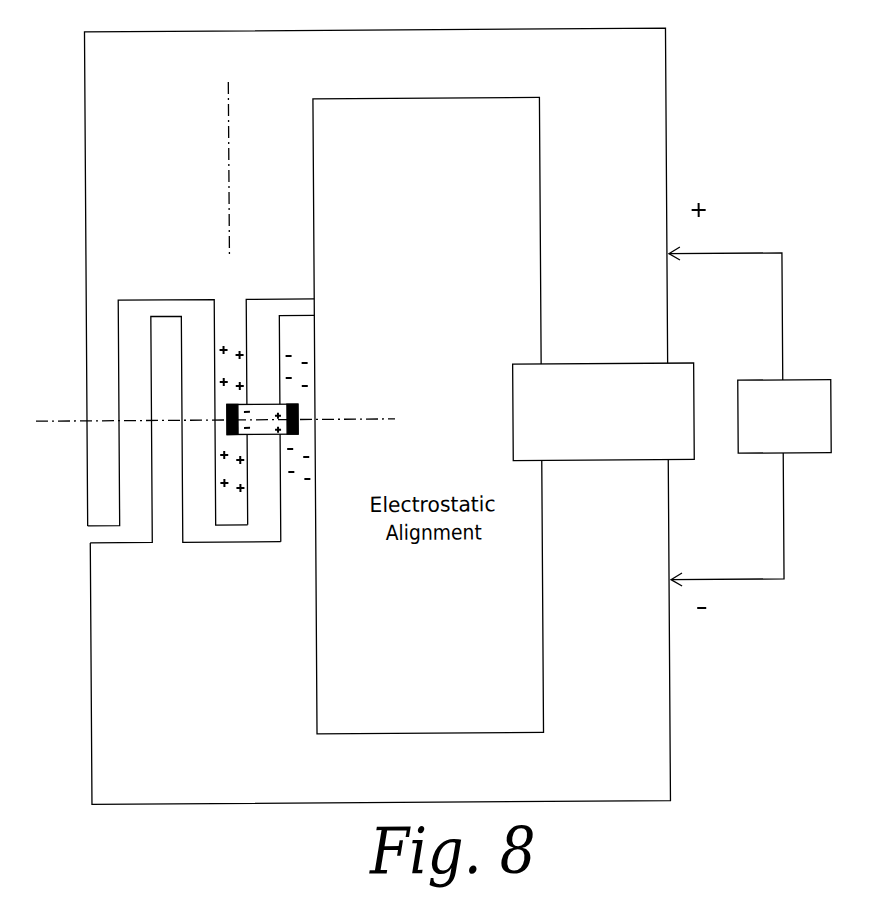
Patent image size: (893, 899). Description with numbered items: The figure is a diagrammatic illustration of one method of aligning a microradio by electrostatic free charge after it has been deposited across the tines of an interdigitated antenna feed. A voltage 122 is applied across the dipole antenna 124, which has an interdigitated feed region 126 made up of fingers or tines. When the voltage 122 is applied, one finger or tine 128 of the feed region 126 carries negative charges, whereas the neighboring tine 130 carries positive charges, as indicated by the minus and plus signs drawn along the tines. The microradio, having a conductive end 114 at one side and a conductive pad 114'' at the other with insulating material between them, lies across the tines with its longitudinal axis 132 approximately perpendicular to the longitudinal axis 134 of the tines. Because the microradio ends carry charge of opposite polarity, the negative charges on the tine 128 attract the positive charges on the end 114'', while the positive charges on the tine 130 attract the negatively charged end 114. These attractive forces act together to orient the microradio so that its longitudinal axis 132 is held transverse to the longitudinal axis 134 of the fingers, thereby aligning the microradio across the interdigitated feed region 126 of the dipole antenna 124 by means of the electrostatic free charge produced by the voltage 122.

The conductive end 114 is at (159, 439).
The conductive pad 114'' is at (335, 348).
The voltage 122 is at (797, 395).
The dipole antenna 124 is at (673, 159).
The interdigitated feed region 126 is at (346, 382).
The tine 128 is at (315, 467).
The tine 130 is at (233, 309).
The longitudinal axis of the microradio 132 is at (383, 418).
The longitudinal axis of the tines 134 is at (229, 169).